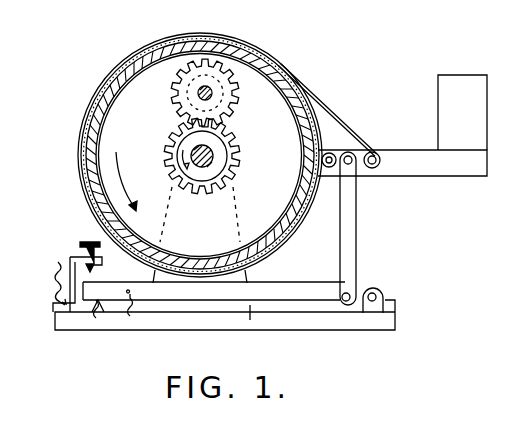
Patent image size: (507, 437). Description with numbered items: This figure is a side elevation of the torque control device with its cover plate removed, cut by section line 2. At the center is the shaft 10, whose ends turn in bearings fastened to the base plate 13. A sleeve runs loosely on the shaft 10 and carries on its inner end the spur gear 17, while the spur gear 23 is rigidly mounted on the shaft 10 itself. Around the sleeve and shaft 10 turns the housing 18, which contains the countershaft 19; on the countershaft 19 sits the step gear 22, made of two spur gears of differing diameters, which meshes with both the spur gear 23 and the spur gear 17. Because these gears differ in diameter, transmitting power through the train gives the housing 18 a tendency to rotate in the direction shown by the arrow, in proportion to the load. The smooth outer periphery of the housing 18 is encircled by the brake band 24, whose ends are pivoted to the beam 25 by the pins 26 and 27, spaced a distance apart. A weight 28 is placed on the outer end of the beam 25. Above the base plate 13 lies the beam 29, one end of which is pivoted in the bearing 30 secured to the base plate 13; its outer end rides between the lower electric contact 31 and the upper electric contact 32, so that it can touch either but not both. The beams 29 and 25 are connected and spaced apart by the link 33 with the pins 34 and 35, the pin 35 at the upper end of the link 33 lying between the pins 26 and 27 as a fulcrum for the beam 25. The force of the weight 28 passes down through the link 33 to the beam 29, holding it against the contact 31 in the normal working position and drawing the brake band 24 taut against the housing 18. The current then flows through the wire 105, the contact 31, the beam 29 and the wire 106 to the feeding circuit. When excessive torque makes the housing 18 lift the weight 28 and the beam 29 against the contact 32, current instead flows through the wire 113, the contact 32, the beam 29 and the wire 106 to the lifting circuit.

The section line 2- 2 is at (205, 5).
The shaft 10 is at (213, 153).
The base plate 13 is at (335, 330).
The spur gear 17 is at (240, 162).
The housing 18 is at (118, 80).
The countershaft 19 is at (199, 95).
The step gear 22 is at (236, 96).
The spur gear 23 is at (214, 170).
The brake band 24 is at (282, 55).
The beam 25 is at (402, 163).
The pin 26 is at (342, 138).
The pin 27 is at (378, 141).
The weight 28 is at (462, 112).
The beam 29 is at (214, 292).
The bearing 30 is at (377, 297).
The lower electric contact 31 is at (97, 318).
The upper electric contact 32 is at (88, 246).
The link 33 is at (354, 222).
The pin 34 is at (350, 292).
The pin 35 is at (351, 164).
The wire 105 is at (87, 318).
The wire 106 is at (130, 318).
The wire 113 is at (57, 262).